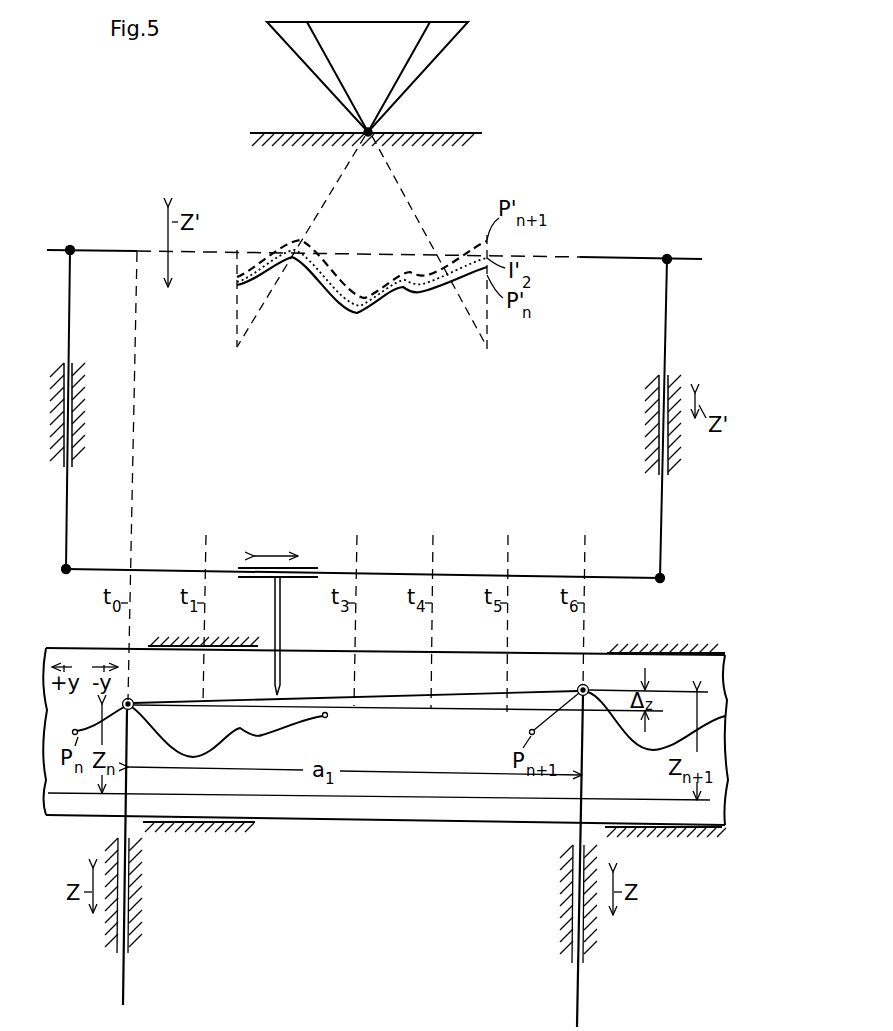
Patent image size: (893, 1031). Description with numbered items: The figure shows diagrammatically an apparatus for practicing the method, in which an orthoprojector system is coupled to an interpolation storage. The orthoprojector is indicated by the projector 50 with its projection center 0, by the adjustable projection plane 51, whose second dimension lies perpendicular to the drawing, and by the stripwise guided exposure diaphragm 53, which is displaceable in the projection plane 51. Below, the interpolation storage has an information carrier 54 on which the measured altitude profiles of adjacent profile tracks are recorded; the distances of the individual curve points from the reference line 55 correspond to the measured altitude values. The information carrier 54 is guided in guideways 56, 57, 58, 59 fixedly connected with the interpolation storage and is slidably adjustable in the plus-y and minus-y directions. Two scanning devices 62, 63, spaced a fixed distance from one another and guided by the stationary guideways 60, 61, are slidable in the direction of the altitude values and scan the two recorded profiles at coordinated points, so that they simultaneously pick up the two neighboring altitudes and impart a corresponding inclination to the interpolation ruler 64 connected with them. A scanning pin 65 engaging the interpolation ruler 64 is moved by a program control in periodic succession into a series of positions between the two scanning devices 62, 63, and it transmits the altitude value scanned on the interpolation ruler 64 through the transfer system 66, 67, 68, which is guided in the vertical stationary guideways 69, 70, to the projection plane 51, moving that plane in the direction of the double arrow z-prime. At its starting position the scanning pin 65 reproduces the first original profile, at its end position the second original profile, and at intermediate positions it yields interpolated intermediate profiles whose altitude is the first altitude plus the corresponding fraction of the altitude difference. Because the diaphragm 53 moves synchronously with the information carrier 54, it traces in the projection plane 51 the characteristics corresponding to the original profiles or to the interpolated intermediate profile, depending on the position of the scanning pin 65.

The projection center 0 is at (372, 130).
The projector 50 is at (420, 72).
The adjustable projection plane 51 is at (107, 249).
The exposure diaphragm 53 is at (292, 245).
The information carrier 54 is at (452, 823).
The reference line 55 is at (84, 820).
The guideway 56 is at (230, 637).
The guideway 57 is at (667, 646).
The guideway 58 is at (205, 830).
The guideway 59 is at (678, 834).
The stationary guideway 60 is at (131, 888).
The stationary guideway 61 is at (586, 922).
The scanning device 62 is at (131, 700).
The scanning device 63 is at (578, 689).
The interpolation ruler 64 is at (393, 697).
The scanning pin 65 is at (281, 625).
The transfer system 66 is at (400, 574).
The transfer system 67 is at (69, 308).
The transfer system 68 is at (666, 297).
The vertical stationary guideway 69 is at (668, 445).
The vertical stationary guideway 70 is at (86, 375).